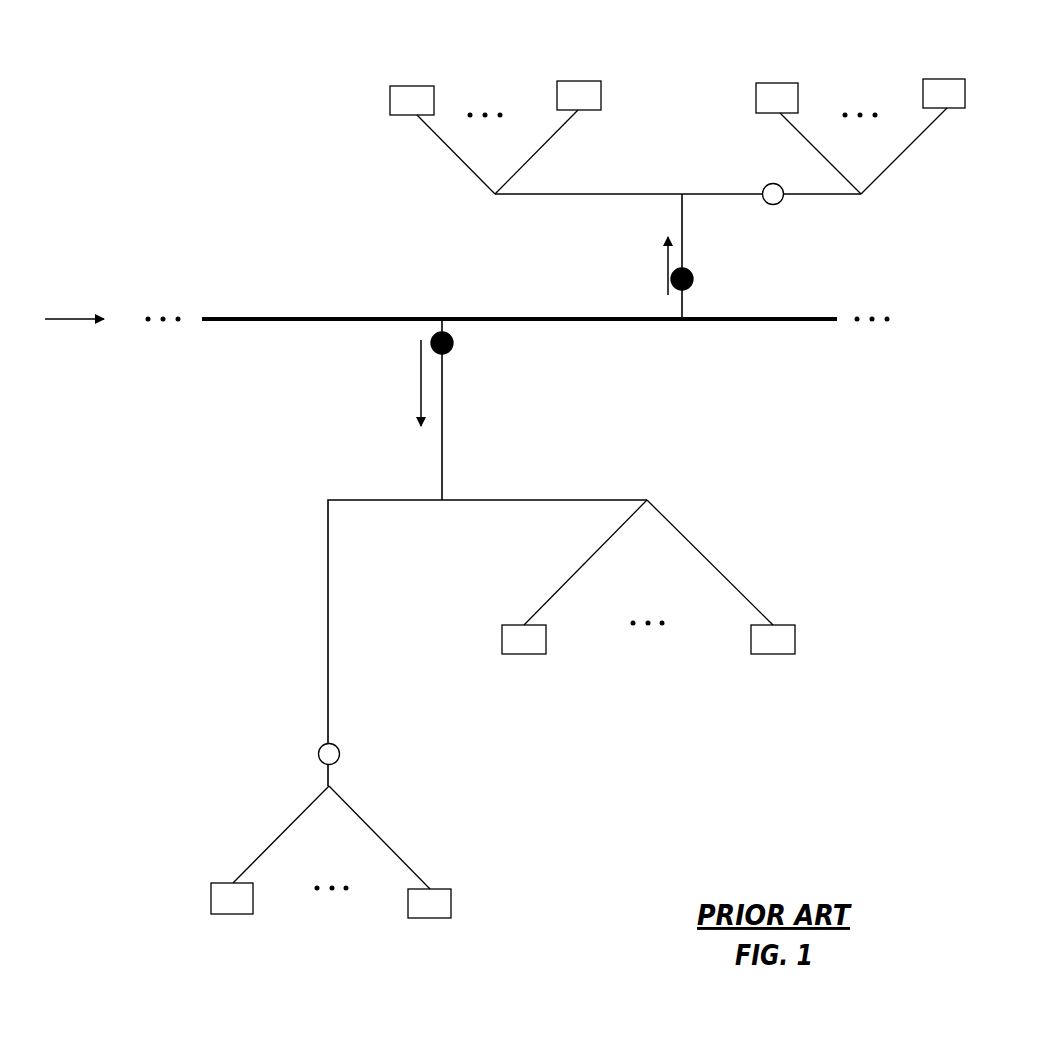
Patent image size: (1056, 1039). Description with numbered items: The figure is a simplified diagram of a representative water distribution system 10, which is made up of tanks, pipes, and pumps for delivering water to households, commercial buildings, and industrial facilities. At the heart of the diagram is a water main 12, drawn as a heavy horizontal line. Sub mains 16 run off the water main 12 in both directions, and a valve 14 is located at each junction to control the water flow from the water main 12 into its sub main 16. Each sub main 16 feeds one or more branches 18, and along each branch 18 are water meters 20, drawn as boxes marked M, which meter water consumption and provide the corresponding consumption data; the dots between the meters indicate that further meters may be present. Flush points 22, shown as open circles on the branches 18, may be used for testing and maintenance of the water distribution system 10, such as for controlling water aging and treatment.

The water distribution system 10 is at (198, 185).
The water main 12 is at (519, 306).
The valve 14 is at (453, 343).
The sub main 16 is at (618, 347).
The branch 18 is at (590, 498).
The water meter 20 is at (390, 100).
The flush point 22 is at (783, 198).